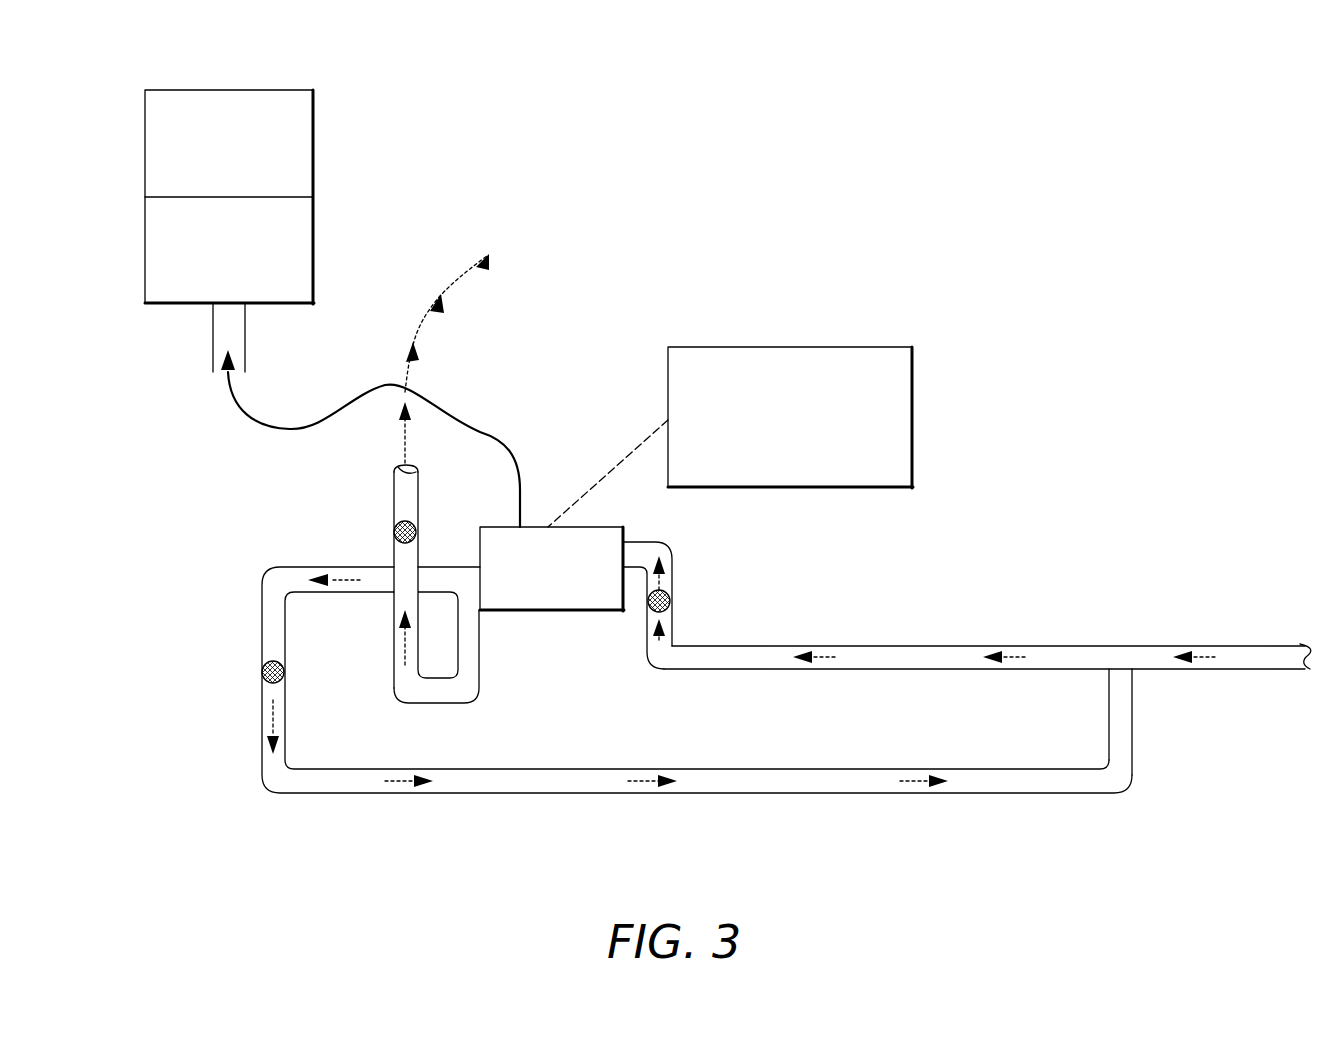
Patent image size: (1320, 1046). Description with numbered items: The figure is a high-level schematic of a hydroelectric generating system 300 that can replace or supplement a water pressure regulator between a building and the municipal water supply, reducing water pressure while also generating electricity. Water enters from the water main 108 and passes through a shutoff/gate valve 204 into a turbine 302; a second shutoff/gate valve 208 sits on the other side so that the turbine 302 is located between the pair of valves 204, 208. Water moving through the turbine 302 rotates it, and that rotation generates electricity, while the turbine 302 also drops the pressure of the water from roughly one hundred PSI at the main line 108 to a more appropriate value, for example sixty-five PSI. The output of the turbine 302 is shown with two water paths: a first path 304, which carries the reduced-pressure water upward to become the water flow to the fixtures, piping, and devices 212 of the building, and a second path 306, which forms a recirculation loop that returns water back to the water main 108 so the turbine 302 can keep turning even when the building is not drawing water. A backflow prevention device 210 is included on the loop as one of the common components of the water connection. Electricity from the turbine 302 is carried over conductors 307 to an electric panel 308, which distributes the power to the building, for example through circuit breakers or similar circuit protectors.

The hydroelectric generating system 300 is at (1090, 163).
The electric panel 308 is at (163, 89).
The conductor 307 is at (497, 440).
The water flow to the fixtures, piping, and devices 212 is at (419, 356).
The first path 304 is at (419, 514).
The shutoff/gate valve 208 is at (394, 531).
The turbine 302 is at (594, 527).
The shutoff/gate valve 204 is at (672, 603).
The water main 108 is at (764, 646).
The second path 306 is at (583, 769).
The backflow prevention device 210 is at (262, 709).